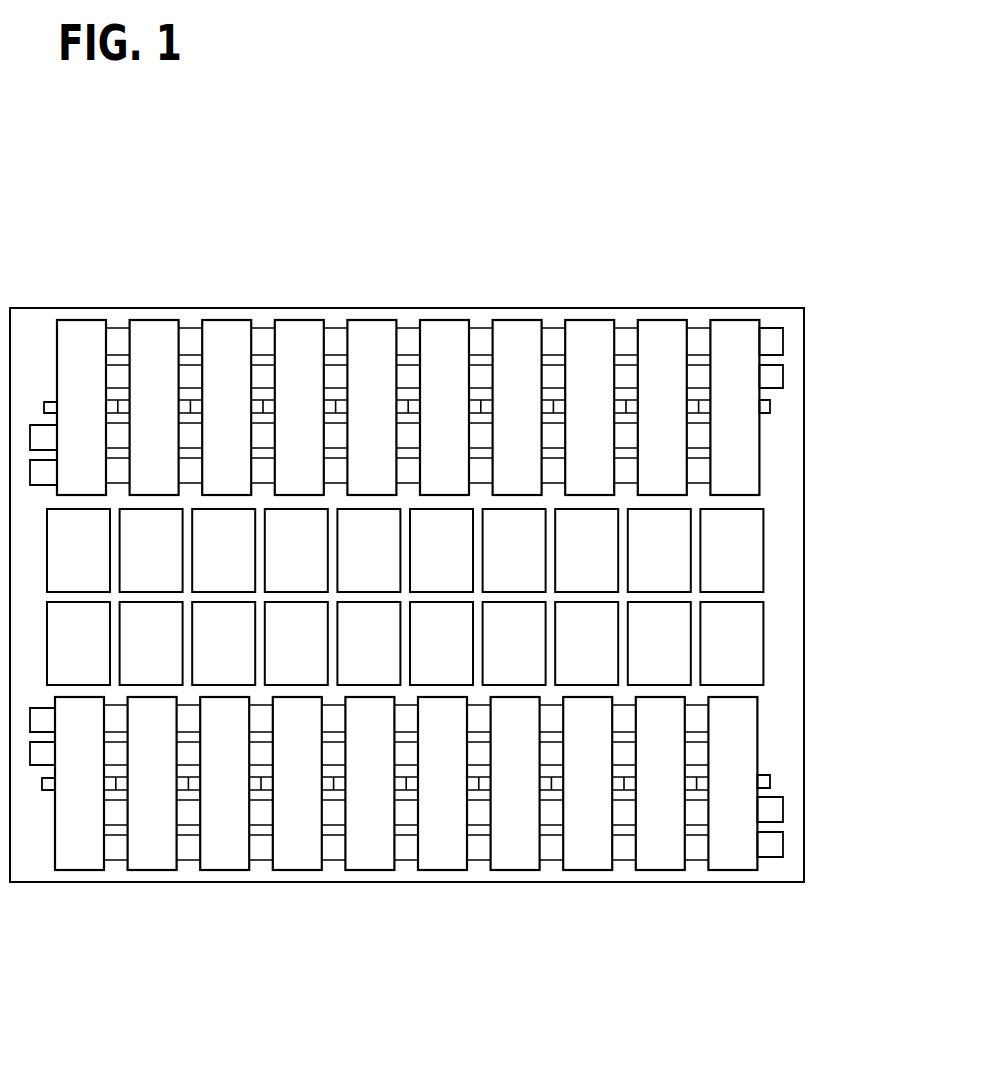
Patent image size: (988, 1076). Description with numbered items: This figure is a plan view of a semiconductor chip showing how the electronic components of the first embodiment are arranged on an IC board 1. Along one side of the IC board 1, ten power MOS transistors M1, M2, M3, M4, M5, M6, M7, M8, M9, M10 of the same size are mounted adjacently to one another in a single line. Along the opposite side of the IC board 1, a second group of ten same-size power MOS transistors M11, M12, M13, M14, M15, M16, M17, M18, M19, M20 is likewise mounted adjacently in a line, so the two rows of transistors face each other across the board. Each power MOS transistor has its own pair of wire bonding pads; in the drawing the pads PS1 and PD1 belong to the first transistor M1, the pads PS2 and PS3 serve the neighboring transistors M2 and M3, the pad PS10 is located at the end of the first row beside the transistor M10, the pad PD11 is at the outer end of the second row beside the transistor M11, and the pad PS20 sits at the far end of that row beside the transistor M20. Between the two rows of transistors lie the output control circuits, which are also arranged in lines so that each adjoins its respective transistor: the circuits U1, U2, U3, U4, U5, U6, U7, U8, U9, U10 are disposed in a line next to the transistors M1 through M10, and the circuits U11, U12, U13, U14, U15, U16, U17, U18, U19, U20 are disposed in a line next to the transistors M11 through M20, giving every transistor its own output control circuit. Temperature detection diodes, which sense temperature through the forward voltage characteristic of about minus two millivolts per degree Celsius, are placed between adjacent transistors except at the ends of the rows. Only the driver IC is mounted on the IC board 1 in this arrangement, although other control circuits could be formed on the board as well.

The IC board 1 is at (565, 307).
The wire bonding pad PD1 is at (36, 424).
The wire bonding pad PD11 is at (35, 768).
The wire bonding pad PS1 is at (118, 362).
The wire bonding pad PS2 is at (188, 362).
The wire bonding pad PS3 is at (265, 362).
The wire bonding pad PS10 is at (786, 364).
The wire bonding pad PS20 is at (784, 843).
The power MOS transistor M1 is at (81, 407).
The power MOS transistor M2 is at (154, 407).
The power MOS transistor M3 is at (226, 407).
The power MOS transistor M4 is at (299, 407).
The power MOS transistor M5 is at (371, 407).
The power MOS transistor M6 is at (444, 407).
The power MOS transistor M7 is at (517, 407).
The power MOS transistor M8 is at (589, 407).
The power MOS transistor M9 is at (662, 407).
The power MOS transistor M10 is at (734, 407).
The power MOS transistor M11 is at (79, 783).
The power MOS transistor M12 is at (152, 783).
The power MOS transistor M13 is at (224, 783).
The power MOS transistor M14 is at (297, 783).
The power MOS transistor M15 is at (369, 783).
The power MOS transistor M16 is at (442, 783).
The power MOS transistor M17 is at (515, 783).
The power MOS transistor M18 is at (587, 783).
The power MOS transistor M19 is at (660, 783).
The power MOS transistor M20 is at (732, 783).
The output control circuit U1 is at (78, 550).
The output control circuit U2 is at (151, 550).
The output control circuit U3 is at (223, 550).
The output control circuit U4 is at (296, 550).
The output control circuit U5 is at (368, 550).
The output control circuit U6 is at (441, 550).
The output control circuit U7 is at (514, 550).
The output control circuit U8 is at (586, 550).
The output control circuit U9 is at (659, 550).
The output control circuit U10 is at (731, 550).
The output control circuit U11 is at (78, 643).
The output control circuit U12 is at (151, 643).
The output control circuit U13 is at (223, 643).
The output control circuit U14 is at (296, 643).
The output control circuit U15 is at (368, 643).
The output control circuit U16 is at (441, 643).
The output control circuit U17 is at (514, 643).
The output control circuit U18 is at (586, 643).
The output control circuit U19 is at (659, 643).
The output control circuit U20 is at (731, 643).